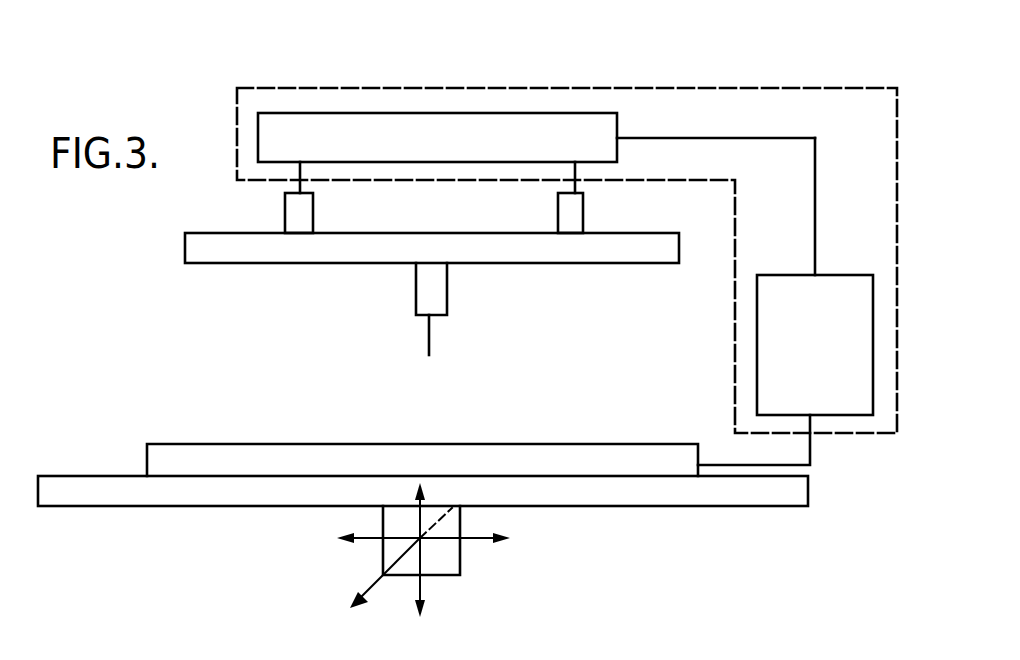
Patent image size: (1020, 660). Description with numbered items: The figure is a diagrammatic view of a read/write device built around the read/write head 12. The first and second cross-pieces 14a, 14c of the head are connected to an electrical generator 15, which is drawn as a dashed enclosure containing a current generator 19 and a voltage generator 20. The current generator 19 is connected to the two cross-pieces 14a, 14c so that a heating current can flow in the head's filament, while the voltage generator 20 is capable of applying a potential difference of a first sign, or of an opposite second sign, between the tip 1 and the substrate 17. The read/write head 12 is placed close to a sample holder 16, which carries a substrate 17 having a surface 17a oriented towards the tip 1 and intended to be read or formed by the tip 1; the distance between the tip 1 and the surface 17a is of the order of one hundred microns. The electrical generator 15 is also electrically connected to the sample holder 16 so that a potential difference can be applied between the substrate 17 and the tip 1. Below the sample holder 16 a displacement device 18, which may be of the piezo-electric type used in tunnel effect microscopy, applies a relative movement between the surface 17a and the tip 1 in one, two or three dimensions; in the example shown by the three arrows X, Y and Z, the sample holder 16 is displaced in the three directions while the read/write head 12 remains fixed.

The tip 1 is at (430, 338).
The read/write head 12 is at (170, 247).
The first cross-piece 14a is at (297, 217).
The second cross-piece 14c is at (573, 218).
The electrical generator 15 is at (756, 88).
The sample holder 16 is at (98, 487).
The substrate 17 is at (240, 457).
The surface 17a is at (285, 445).
The displacement device 18 is at (445, 562).
The current generator 19 is at (395, 135).
The voltage generator 20 is at (773, 343).